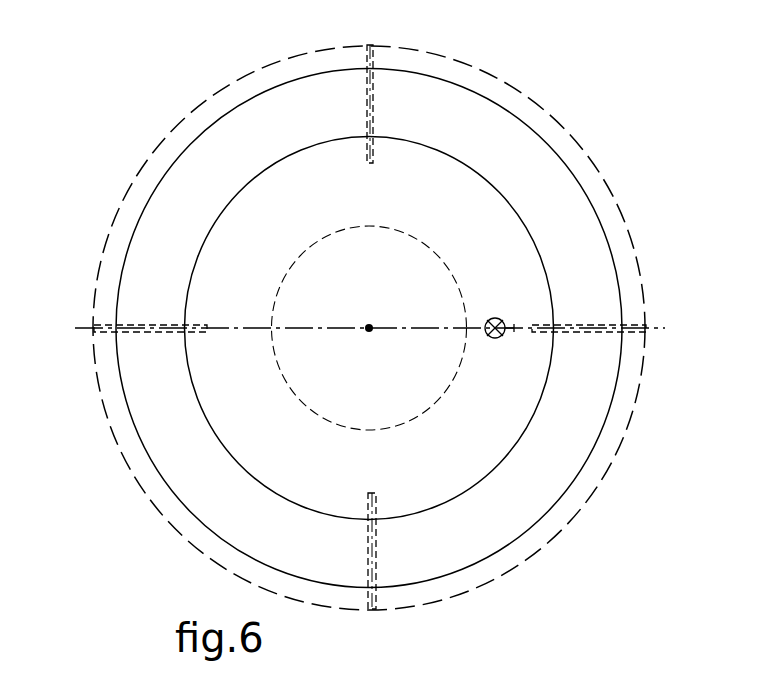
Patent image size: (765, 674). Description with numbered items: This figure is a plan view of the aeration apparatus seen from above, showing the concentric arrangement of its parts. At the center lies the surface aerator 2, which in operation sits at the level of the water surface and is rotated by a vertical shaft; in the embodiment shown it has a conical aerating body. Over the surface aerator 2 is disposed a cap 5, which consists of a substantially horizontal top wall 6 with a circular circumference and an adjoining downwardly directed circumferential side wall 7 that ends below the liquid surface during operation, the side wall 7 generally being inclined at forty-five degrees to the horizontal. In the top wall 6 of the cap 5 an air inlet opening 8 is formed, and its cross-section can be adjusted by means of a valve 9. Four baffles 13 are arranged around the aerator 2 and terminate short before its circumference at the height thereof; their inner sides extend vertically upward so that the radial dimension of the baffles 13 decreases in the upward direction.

The surface aerator 2 is at (425, 263).
The cap 5 is at (144, 151).
The top wall 6 is at (287, 180).
The side wall 7 is at (483, 118).
The air inlet opening 8 is at (493, 318).
The valve 9 is at (498, 325).
The baffles 13 is at (370, 102).